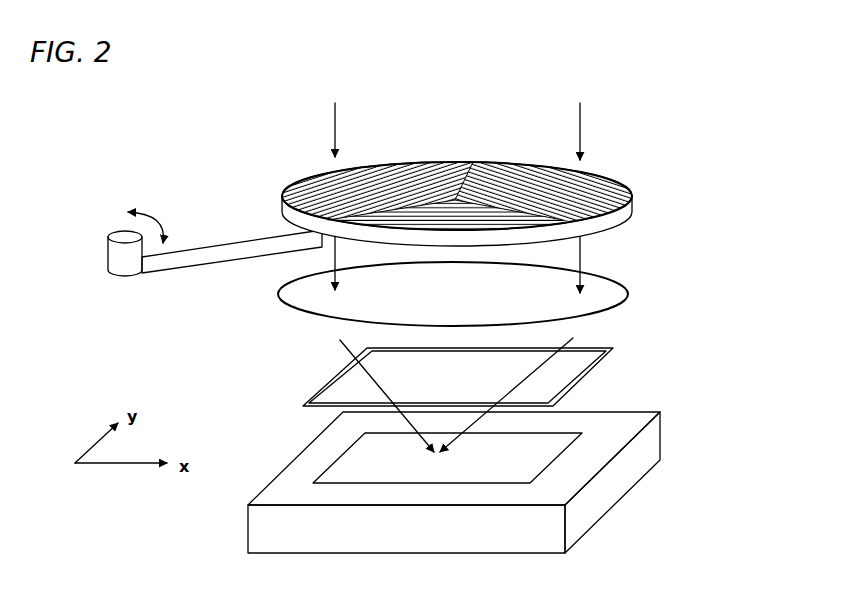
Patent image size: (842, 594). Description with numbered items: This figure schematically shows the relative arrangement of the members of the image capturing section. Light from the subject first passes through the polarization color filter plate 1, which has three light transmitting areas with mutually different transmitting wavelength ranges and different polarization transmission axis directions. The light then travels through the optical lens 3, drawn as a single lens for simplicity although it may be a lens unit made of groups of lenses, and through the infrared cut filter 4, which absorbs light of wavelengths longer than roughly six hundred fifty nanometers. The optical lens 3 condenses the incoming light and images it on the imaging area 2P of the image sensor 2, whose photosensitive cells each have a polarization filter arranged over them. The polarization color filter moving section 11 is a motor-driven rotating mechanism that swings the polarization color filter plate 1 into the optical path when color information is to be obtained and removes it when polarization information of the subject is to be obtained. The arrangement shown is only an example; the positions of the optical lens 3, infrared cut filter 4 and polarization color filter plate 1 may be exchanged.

The polarization color filter plate 1 is at (457, 193).
The optical lens 3 is at (502, 263).
The infrared cut filter 4 is at (515, 337).
The image sensor 2 is at (507, 450).
The imaging area 2P is at (414, 444).
The polarization color filter moving section 11 is at (181, 231).